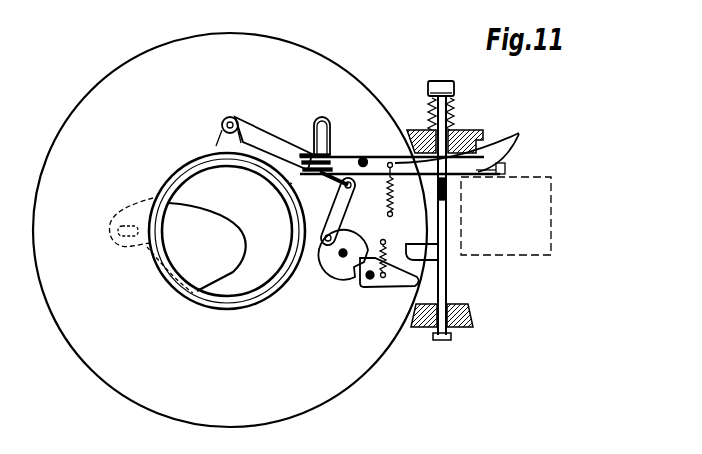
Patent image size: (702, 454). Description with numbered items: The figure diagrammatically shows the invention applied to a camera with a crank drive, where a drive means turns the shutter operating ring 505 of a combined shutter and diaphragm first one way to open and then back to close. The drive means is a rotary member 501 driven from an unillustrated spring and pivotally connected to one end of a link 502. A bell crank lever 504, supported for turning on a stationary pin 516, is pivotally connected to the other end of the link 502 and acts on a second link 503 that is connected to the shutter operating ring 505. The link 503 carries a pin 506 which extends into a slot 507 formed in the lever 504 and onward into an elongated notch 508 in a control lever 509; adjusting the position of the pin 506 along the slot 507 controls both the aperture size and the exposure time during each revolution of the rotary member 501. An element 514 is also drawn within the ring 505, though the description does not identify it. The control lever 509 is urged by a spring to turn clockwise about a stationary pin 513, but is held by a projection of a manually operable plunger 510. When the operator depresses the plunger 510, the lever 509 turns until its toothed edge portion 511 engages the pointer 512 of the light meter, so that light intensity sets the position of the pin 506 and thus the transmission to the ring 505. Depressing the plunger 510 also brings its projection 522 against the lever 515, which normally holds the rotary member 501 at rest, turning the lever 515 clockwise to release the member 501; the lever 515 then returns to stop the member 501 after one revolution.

The rotary member 501 is at (341, 269).
The link 502 is at (337, 211).
The second link 503 is at (257, 140).
The bell crank lever 504 is at (326, 157).
The shutter operating ring 505 is at (283, 290).
The pin 506 is at (292, 181).
The slot 507 is at (323, 118).
The elongated notch 508 is at (323, 158).
The control lever 509 is at (366, 159).
The manually operable plunger 510 is at (441, 128).
The toothed edge portion 511 is at (483, 167).
The pointer 512 is at (486, 174).
The stationary pin 513 is at (390, 162).
The shutter 514 is at (213, 270).
The lever 515 is at (398, 285).
The stationary pin 516 is at (313, 176).
The projection 522 is at (430, 256).